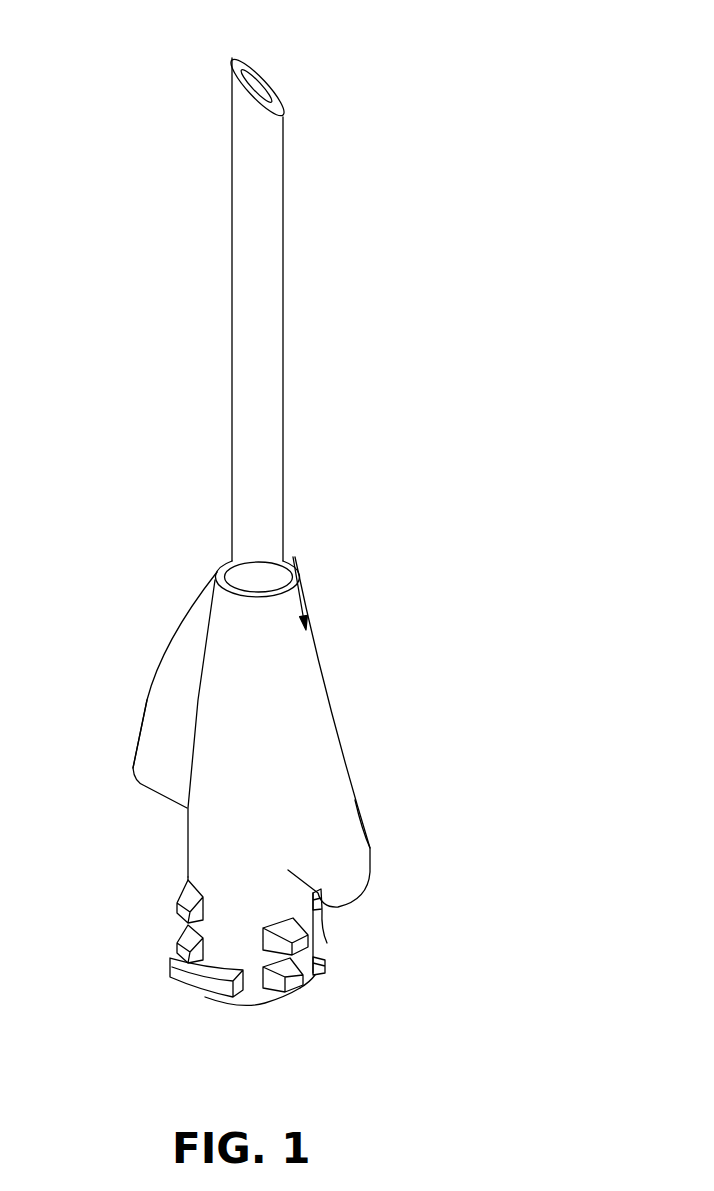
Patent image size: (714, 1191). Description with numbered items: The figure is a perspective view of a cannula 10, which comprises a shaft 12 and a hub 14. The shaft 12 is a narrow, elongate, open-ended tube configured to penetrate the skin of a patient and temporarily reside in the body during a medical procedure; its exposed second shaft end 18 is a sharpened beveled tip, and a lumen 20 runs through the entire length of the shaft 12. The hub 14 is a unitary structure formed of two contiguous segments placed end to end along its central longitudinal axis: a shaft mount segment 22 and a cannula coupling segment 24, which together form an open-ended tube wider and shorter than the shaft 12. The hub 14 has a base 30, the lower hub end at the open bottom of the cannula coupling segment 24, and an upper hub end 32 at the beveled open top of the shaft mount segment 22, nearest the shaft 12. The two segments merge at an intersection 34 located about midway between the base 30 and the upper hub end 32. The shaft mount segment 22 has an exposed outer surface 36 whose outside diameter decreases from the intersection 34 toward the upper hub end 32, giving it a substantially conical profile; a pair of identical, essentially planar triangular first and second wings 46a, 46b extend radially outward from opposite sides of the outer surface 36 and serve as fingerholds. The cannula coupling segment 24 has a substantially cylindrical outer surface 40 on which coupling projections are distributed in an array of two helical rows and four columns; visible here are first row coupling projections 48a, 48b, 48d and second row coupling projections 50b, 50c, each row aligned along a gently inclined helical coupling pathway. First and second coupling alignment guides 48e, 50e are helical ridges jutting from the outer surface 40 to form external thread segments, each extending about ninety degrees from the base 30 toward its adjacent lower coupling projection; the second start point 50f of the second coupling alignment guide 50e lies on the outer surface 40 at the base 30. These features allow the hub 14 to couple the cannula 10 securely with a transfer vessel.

The cannula 10 is at (368, 310).
The shaft 12 is at (283, 190).
The hub 14 is at (282, 676).
The second shaft end 18 is at (231, 113).
The lumen 20 is at (254, 88).
The shaft mount segment 22 is at (262, 613).
The cannula coupling segment 24 is at (238, 893).
The base 30 is at (222, 1002).
The upper hub end 32 is at (228, 563).
The intersection 34 is at (227, 823).
The outer surface 36 is at (255, 720).
The outer surface 40 is at (265, 890).
The first wing 46a is at (362, 793).
The second wing 46b is at (162, 655).
The first row coupling projection 48a is at (273, 990).
The first row coupling projection 48b is at (320, 913).
The first row coupling projection 48d is at (177, 907).
The first coupling alignment guide 48e is at (185, 992).
The second row coupling projection 50b is at (177, 948).
The second row coupling projection 50c is at (263, 928).
The second coupling alignment guide 50e is at (327, 943).
The second start point 50f is at (315, 975).